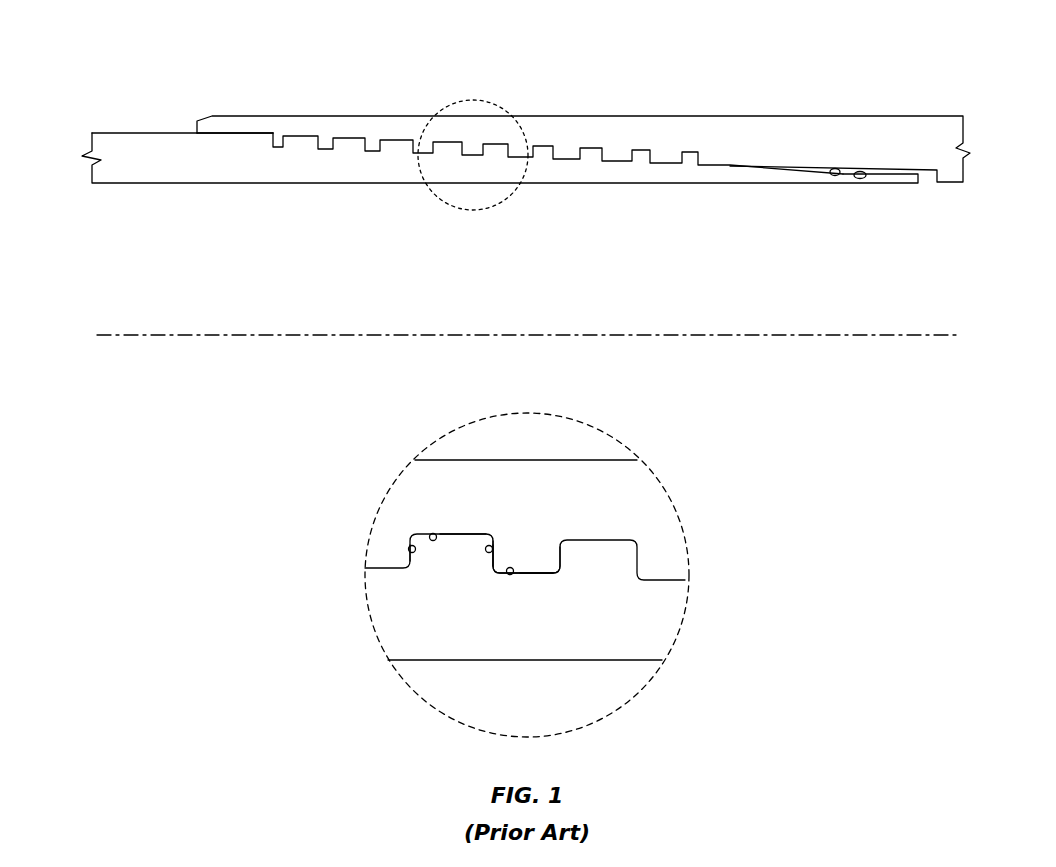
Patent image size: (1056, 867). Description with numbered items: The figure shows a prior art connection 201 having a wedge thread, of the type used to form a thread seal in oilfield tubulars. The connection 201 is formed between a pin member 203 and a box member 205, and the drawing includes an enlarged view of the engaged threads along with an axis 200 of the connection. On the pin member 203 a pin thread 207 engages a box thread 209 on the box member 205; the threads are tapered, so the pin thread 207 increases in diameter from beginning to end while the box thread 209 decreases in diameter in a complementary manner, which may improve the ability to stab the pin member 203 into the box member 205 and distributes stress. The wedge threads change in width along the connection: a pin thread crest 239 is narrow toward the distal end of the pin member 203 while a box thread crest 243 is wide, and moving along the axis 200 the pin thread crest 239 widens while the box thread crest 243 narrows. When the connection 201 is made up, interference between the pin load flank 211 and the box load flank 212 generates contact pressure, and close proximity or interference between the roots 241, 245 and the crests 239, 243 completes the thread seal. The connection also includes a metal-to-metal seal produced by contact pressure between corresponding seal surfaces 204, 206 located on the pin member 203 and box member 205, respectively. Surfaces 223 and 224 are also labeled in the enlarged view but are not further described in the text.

The axis 200 is at (813, 335).
The prior art connection 201 is at (203, 82).
The pin member 203 is at (180, 170).
The seal surface 204 is at (843, 176).
The box member 205 is at (794, 153).
The seal surface 206 is at (862, 174).
The pin thread 207 is at (472, 580).
The box thread 209 is at (555, 568).
The pin load flank 211 is at (410, 550).
The box load flank 212 is at (408, 558).
The recess sidewall surface 223 is at (497, 561).
The projection sidewall surface 224 is at (494, 547).
The pin thread crest 239 is at (433, 535).
The root 241 is at (543, 575).
The box thread crest 243 is at (510, 578).
The root 245 is at (470, 534).